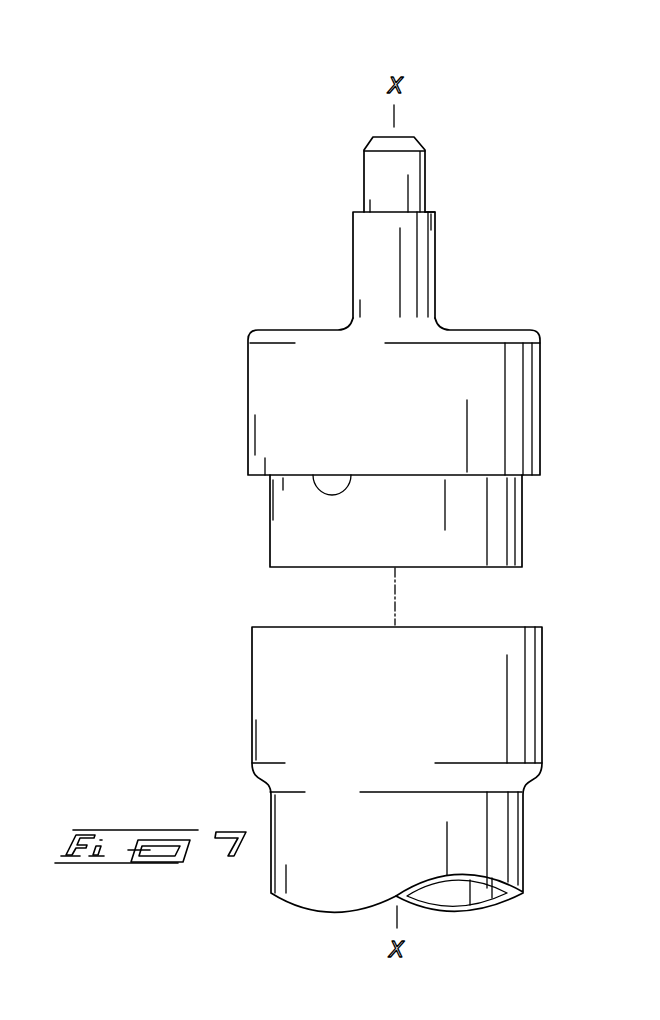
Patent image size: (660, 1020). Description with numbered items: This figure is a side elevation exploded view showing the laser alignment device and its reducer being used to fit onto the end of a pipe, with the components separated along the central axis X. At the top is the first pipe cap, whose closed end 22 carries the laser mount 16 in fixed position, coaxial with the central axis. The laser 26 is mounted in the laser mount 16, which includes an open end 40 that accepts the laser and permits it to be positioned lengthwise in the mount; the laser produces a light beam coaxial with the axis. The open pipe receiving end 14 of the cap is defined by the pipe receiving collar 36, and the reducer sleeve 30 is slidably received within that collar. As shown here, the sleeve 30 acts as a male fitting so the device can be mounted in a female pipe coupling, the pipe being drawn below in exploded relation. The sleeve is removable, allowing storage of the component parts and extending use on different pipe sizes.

The open pipe receiving end 14 is at (313, 476).
The laser mount 16 is at (376, 254).
The closed end 22 is at (492, 326).
The laser 26 is at (378, 173).
The reducer sleeve 30 is at (347, 535).
The pipe receiving collar 36 is at (248, 390).
The open end 40 is at (432, 210).